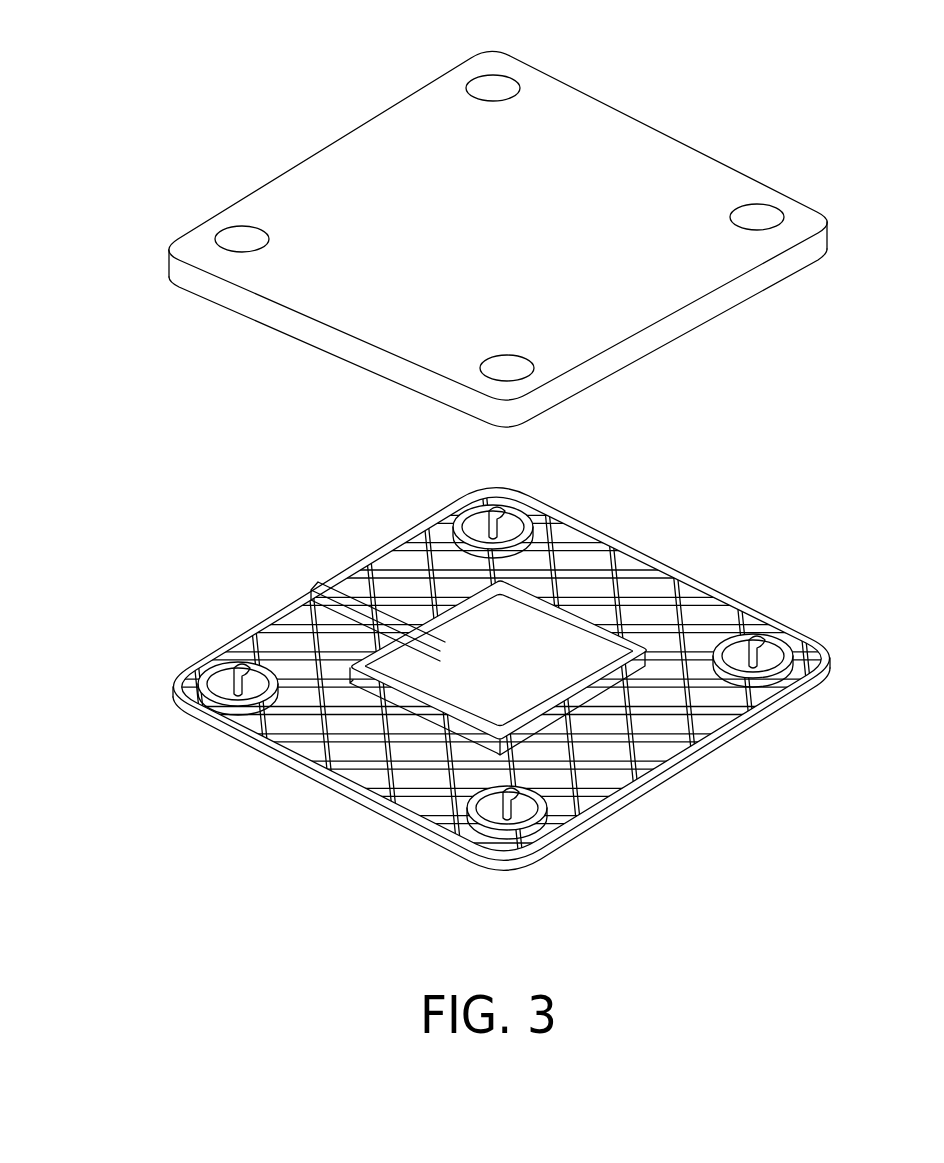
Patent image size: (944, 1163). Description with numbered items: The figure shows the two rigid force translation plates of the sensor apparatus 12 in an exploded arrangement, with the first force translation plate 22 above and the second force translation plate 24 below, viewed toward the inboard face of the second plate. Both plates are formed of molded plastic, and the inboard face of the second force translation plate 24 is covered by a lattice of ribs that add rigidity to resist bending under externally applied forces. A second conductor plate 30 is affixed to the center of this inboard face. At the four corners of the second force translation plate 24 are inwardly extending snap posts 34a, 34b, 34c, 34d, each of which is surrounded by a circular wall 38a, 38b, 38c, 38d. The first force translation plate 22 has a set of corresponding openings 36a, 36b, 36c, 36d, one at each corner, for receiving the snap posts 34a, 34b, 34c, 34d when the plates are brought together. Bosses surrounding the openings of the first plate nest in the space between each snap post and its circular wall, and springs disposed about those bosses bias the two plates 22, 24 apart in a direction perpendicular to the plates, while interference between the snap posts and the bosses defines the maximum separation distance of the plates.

The sensor apparatus 12 is at (145, 352).
The first force translation plate 22 is at (636, 154).
The second force translation plate 24 is at (663, 569).
The second conductor plate 30 is at (540, 683).
The snap post 34a is at (770, 660).
The snap post 34b is at (508, 521).
The snap post 34c is at (237, 682).
The snap post 34d is at (517, 800).
The opening 36a is at (758, 214).
The opening 36b is at (492, 86).
The opening 36c is at (240, 238).
The opening 36d is at (507, 368).
The circular wall 38a is at (787, 642).
The circular wall 38b is at (459, 523).
The circular wall 38c is at (229, 708).
The circular wall 38d is at (467, 826).